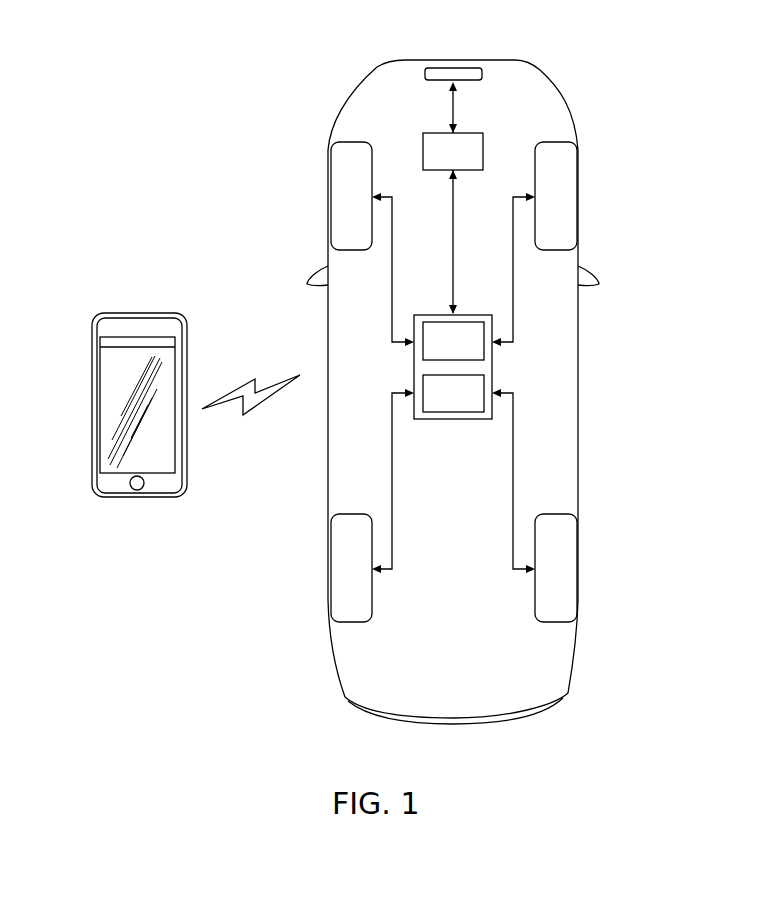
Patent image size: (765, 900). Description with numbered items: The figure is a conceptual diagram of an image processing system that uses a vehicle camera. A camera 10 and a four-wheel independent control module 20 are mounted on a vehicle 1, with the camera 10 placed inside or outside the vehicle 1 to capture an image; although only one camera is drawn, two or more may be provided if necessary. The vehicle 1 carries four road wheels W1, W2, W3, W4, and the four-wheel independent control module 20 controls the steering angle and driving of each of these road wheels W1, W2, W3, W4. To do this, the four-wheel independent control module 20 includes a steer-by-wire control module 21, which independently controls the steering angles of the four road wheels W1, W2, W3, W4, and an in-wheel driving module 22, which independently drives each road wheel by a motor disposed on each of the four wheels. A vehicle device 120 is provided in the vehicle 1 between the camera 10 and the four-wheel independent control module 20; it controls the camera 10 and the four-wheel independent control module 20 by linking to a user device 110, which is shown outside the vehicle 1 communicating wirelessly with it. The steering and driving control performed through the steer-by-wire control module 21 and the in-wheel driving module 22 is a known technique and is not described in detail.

The vehicle 1 is at (556, 64).
The camera 10 is at (425, 74).
The vehicle device 120 is at (453, 151).
The four-wheel independent control module 20 is at (452, 421).
The steer-by-wire control module 21 is at (453, 341).
The in-wheel driving module 22 is at (453, 393).
The road wheel W1 is at (335, 195).
The road wheel W2 is at (575, 193).
The road wheel W3 is at (578, 566).
The road wheel W4 is at (335, 566).
The user device 110 is at (137, 498).